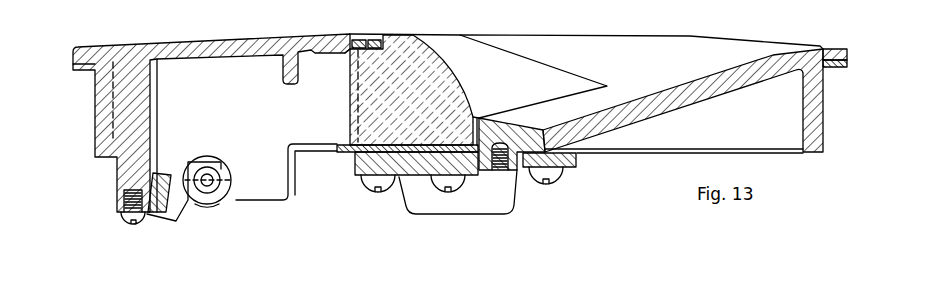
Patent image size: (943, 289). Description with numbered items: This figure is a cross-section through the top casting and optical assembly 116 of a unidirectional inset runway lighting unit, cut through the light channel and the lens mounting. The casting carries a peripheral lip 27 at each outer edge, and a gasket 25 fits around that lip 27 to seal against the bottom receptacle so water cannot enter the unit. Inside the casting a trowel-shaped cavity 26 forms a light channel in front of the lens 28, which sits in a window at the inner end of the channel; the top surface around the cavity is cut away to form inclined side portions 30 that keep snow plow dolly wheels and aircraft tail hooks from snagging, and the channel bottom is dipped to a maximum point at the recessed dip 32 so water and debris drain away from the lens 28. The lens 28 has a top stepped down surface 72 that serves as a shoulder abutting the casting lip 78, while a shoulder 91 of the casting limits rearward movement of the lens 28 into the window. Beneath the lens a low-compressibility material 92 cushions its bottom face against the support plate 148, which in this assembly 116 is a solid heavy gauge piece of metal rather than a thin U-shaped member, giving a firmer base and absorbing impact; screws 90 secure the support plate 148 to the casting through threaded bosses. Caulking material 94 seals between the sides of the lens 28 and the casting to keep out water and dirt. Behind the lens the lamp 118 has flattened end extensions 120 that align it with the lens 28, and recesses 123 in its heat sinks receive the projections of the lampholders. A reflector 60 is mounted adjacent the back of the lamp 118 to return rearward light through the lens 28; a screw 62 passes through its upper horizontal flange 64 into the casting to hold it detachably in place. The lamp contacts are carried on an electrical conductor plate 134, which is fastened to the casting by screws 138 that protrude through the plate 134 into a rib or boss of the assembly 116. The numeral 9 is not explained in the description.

The housing 9 is at (586, 28).
The gasket 25 is at (84, 68).
The trowel-shaped cavity 26 is at (681, 88).
The peripheral lip 27 is at (88, 47).
The lens 28 is at (494, 83).
The inclined side portions 30 is at (496, 42).
The recessed dip 32 is at (536, 134).
The reflector 60 is at (178, 218).
The screw 62 is at (122, 220).
The upper horizontal flange 64 is at (152, 215).
The top stepped down surface 72 is at (363, 36).
The casting lip 78 is at (368, 37).
The screws 90 is at (437, 180).
The shoulder 91 is at (347, 53).
The low compressibility material 92 is at (347, 153).
The caulking material 94 is at (477, 117).
The top casting and optical assembly 116 is at (255, 27).
The lamp 118 is at (217, 165).
The flattened end extensions 120 is at (200, 204).
The recesses 123 is at (217, 187).
The electrical conductor plate 134 is at (570, 162).
The screws 138 is at (558, 177).
The support plate 148 is at (360, 168).